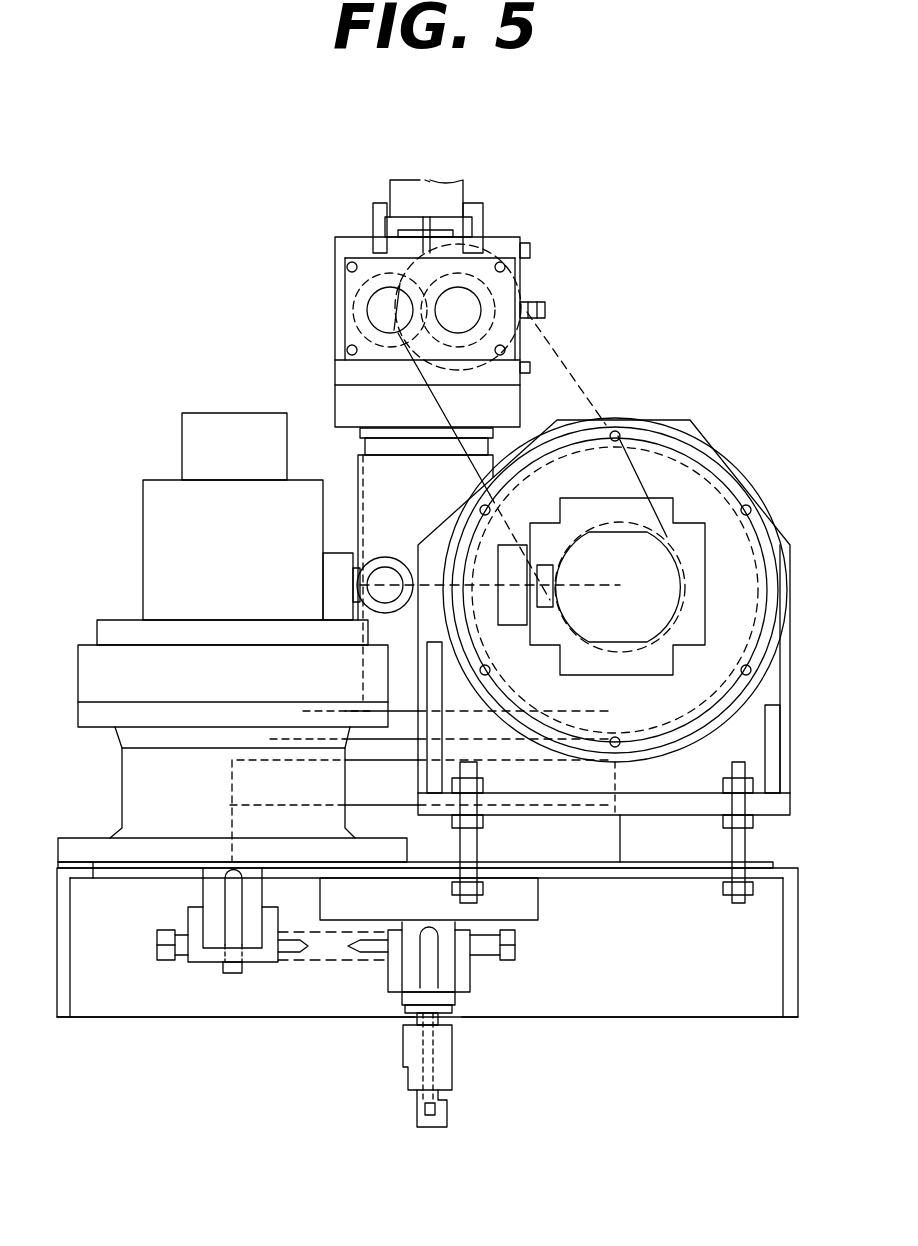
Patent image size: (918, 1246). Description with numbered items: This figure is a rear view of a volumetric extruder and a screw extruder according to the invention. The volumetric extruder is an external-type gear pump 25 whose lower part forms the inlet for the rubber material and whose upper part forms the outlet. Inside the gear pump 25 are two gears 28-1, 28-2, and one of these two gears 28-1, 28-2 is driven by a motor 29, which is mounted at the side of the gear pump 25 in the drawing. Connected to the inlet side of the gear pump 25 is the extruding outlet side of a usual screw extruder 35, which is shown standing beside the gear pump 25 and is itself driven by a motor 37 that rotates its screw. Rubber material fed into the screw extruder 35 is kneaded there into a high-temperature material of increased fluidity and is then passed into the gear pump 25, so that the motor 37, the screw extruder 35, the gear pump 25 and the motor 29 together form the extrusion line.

The gear pump 25 is at (338, 281).
The gear 28-1 is at (497, 262).
The gear 28-2 is at (362, 322).
The motor 29 is at (637, 418).
The screw extruder 35 is at (352, 489).
The motor 37 is at (155, 513).